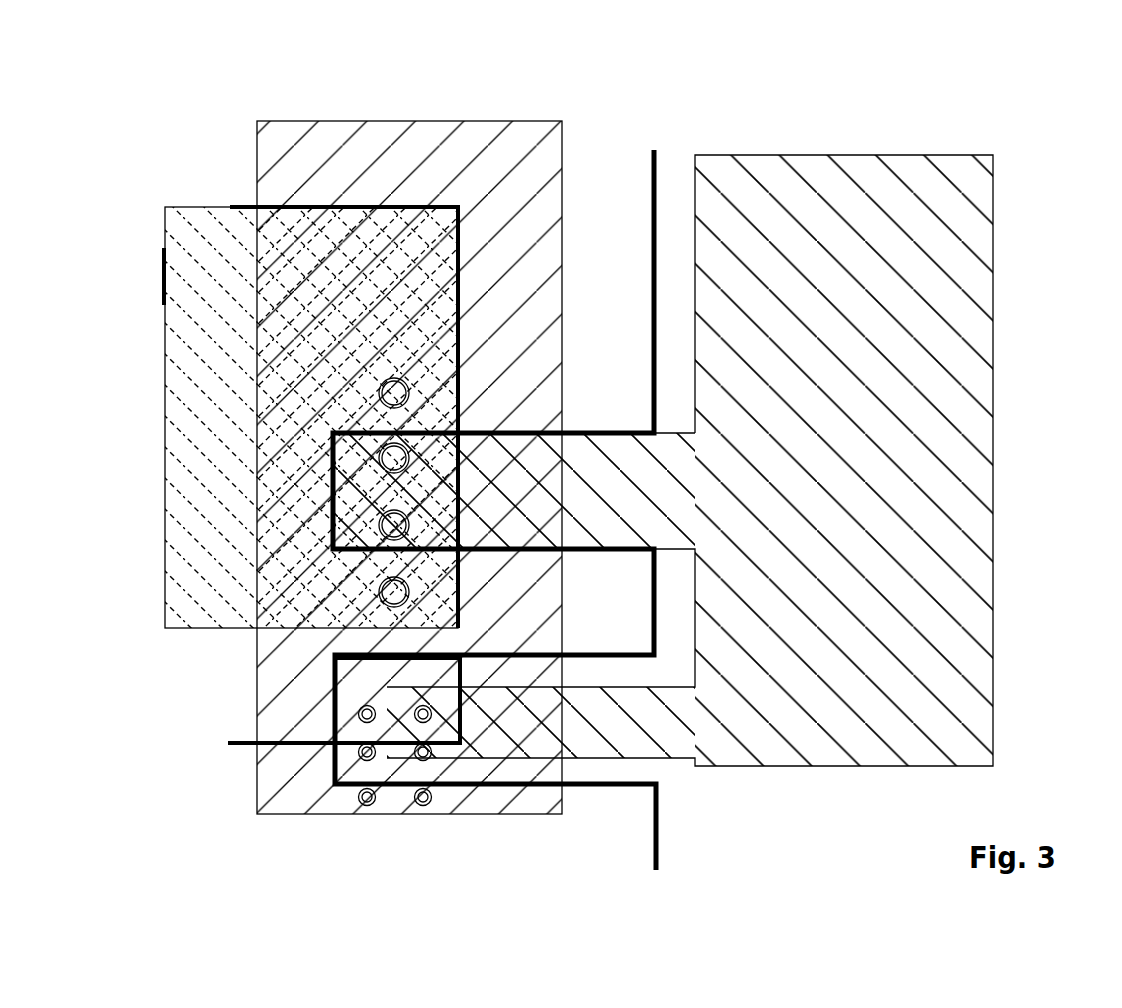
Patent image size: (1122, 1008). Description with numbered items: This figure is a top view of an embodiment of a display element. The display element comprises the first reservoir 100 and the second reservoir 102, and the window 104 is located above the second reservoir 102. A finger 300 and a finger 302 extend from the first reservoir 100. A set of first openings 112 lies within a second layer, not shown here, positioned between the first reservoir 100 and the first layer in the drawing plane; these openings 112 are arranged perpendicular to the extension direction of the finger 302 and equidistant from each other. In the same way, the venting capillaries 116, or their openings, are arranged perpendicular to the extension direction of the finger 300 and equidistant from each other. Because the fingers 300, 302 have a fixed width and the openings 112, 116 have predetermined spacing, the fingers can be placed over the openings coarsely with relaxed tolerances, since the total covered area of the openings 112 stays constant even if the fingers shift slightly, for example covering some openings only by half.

The first reservoir 100 is at (977, 462).
The second reservoir 102 is at (428, 120).
The window 104 is at (180, 205).
The first openings 112 is at (408, 385).
The venting capillaries 116 is at (427, 805).
The finger 300 is at (605, 784).
The finger 302 is at (590, 425).